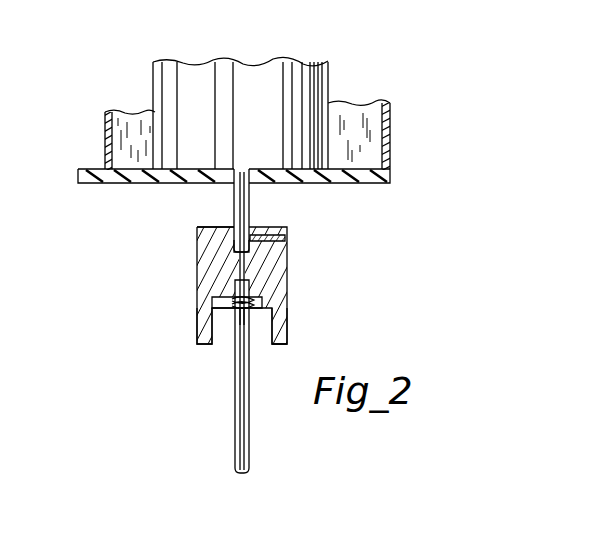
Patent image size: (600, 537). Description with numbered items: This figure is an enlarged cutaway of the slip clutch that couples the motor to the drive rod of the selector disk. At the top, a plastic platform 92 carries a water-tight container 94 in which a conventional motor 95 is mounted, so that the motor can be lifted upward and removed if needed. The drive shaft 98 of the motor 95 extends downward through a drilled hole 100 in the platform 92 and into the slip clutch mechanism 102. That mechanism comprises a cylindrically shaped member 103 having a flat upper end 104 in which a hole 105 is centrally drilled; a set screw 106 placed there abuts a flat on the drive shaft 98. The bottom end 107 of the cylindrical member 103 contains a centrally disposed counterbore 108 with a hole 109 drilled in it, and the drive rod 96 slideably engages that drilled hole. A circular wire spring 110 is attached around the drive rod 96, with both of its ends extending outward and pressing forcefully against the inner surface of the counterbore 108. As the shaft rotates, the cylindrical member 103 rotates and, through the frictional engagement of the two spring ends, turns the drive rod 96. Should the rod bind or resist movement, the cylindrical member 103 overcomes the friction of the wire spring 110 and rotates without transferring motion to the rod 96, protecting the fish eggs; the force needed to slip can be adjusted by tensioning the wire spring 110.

The platform 92 is at (96, 189).
The water-tight container 94 is at (104, 146).
The motor 95 is at (296, 104).
The drive rod 96 is at (250, 448).
The drive shaft 98 is at (250, 207).
The drilled hole 100 is at (250, 200).
The slip clutch mechanism 102 is at (291, 288).
The cylindrically shaped member 103 is at (289, 326).
The flat upper end 104 is at (206, 226).
The hole 105 is at (230, 236).
The set screw 106 is at (284, 236).
The bottom end 107 is at (199, 346).
The counterbore 108 is at (284, 346).
The hole 109 is at (238, 292).
The circular wire spring 110 is at (231, 312).